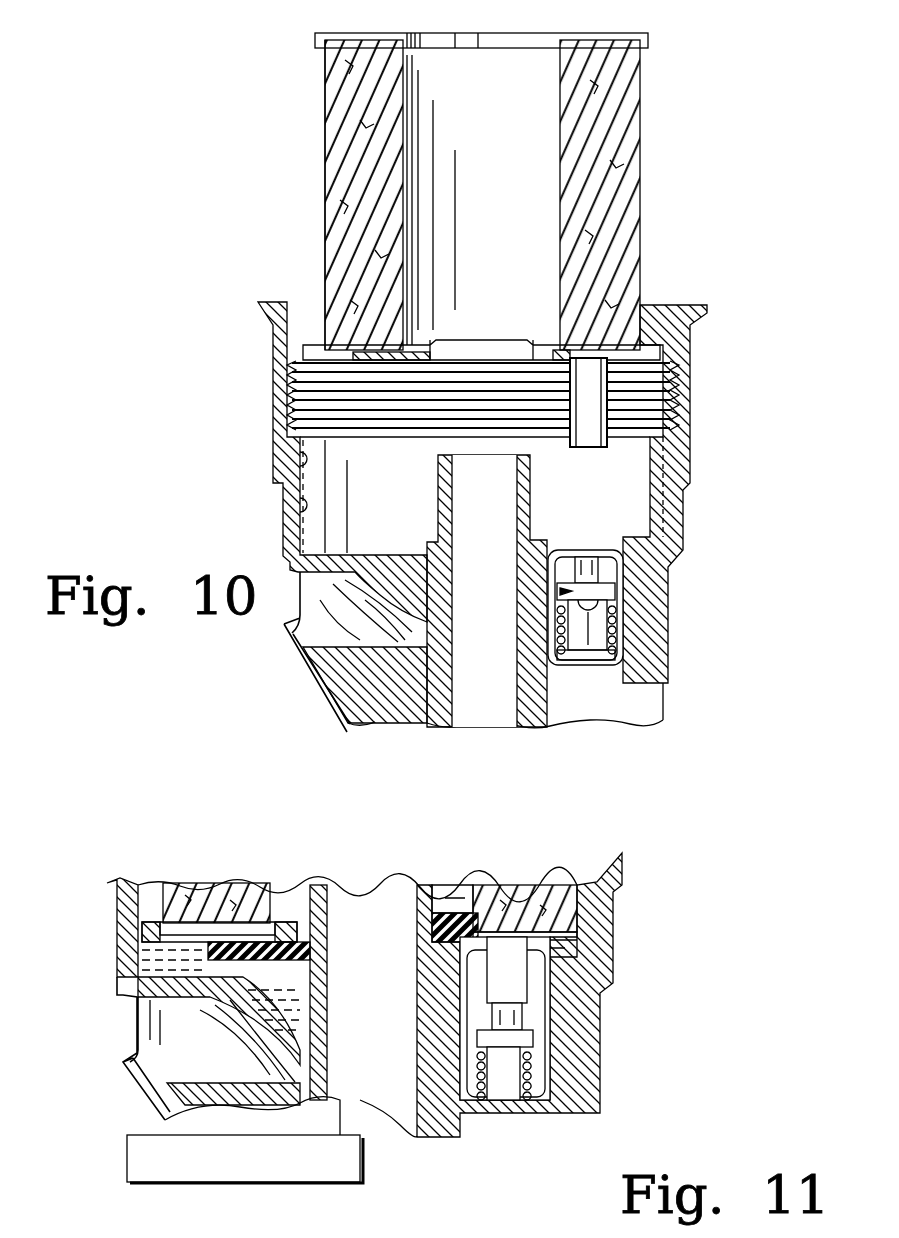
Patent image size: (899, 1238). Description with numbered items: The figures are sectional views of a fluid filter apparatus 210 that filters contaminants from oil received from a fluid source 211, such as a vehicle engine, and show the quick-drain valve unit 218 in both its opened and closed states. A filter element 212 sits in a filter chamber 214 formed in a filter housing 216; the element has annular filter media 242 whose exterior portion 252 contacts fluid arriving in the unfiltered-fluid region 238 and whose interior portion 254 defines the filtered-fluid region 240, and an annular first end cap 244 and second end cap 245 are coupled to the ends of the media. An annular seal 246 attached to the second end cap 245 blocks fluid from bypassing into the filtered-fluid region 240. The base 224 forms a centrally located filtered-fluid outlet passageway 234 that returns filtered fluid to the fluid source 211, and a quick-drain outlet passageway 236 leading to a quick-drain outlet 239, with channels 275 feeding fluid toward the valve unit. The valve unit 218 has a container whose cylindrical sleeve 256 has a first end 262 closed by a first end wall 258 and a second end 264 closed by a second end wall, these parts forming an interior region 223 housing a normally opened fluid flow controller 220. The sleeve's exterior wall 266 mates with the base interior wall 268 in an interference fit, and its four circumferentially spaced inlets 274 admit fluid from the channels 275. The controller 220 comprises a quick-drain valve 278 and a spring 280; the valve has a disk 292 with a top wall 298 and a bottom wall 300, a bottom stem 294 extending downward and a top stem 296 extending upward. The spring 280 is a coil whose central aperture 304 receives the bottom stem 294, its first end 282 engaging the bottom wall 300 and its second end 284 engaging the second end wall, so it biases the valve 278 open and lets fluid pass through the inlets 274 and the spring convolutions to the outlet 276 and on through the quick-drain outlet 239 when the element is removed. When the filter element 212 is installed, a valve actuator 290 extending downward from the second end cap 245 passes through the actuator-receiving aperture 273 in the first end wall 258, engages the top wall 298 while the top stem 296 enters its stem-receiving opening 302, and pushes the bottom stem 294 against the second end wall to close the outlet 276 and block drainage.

In FIG. 10, the fluid filter apparatus 210 is at (165, 95).
In FIG. 11, the fluid filter apparatus 210 is at (158, 812).
In FIG. 11, the fluid source 211 is at (127, 1160).
In FIG. 10, the filter element 212 is at (320, 133).
In FIG. 11, the filter element 212 is at (532, 892).
In FIG. 10, the filter chamber 214 is at (300, 459).
In FIG. 11, the filter chamber 214 is at (150, 883).
In FIG. 10, the filter housing 216 is at (268, 358).
In FIG. 11, the filter housing 216 is at (625, 890).
In FIG. 10, the quick-drain valve unit 218 is at (627, 538).
In FIG. 11, the quick-drain valve unit 218 is at (552, 975).
In FIG. 10, the fluid flow controller 220 is at (598, 668).
In FIG. 11, the fluid flow controller 220 is at (505, 1103).
In FIG. 10, the interior region 223 is at (620, 565).
In FIG. 11, the interior region 223 is at (560, 985).
In FIG. 10, the base 224 is at (275, 425).
In FIG. 11, the base 224 is at (614, 912).
In FIG. 10, the filtered-fluid outlet passageway 234 is at (450, 500).
In FIG. 11, the filtered-fluid outlet passageway 234 is at (340, 887).
In FIG. 10, the quick-drain outlet passageway 236 is at (620, 625).
In FIG. 11, the quick-drain outlet passageway 236 is at (560, 1040).
In FIG. 10, the unfiltered-fluid region 238 is at (300, 505).
In FIG. 11, the unfiltered-fluid region 238 is at (125, 900).
In FIG. 10, the quick-drain outlet 239 is at (560, 722).
In FIG. 11, the quick-drain outlet 239 is at (472, 1120).
In FIG. 11, the filtered-fluid region 240 is at (280, 895).
In FIG. 10, the filter media 242 is at (345, 165).
In FIG. 11, the filter media 242 is at (226, 895).
In FIG. 10, the first end cap 244 is at (322, 33).
In FIG. 10, the second end cap 245 is at (315, 345).
In FIG. 11, the second end cap 245 is at (455, 885).
In FIG. 10, the annular seal 246 is at (540, 350).
In FIG. 11, the annular seal 246 is at (405, 885).
In FIG. 10, the exterior portion 252 is at (325, 215).
In FIG. 11, the exterior portion 252 is at (580, 885).
In FIG. 10, the interior portion 254 is at (408, 175).
In FIG. 11, the interior portion 254 is at (470, 885).
In FIG. 10, the cylindrical sleeve 256 is at (625, 652).
In FIG. 11, the cylindrical sleeve 256 is at (560, 1090).
In FIG. 10, the first end wall 258 is at (562, 548).
In FIG. 11, the first end wall 258 is at (470, 945).
In FIG. 10, the first end 262 is at (560, 598).
In FIG. 11, the first end 262 is at (455, 1030).
In FIG. 10, the second end 264 is at (560, 700).
In FIG. 11, the second end 264 is at (462, 1082).
In FIG. 10, the exterior wall 266 is at (622, 690).
In FIG. 11, the exterior wall 266 is at (560, 1100).
In FIG. 10, the interior wall 268 is at (625, 676).
In FIG. 11, the interior wall 268 is at (595, 1103).
In FIG. 10, the actuator-receiving aperture 273 is at (585, 540).
In FIG. 11, the actuator-receiving aperture 273 is at (520, 958).
In FIG. 10, the inlets 274 is at (622, 580).
In FIG. 11, the inlets 274 is at (458, 992).
In FIG. 10, the channels 275 is at (400, 572).
In FIG. 11, the channels 275 is at (258, 1000).
In FIG. 10, the outlet 276 is at (580, 692).
In FIG. 11, the outlet 276 is at (512, 1103).
In FIG. 10, the quick-drain valve 278 is at (560, 575).
In FIG. 11, the quick-drain valve 278 is at (460, 1040).
In FIG. 10, the spring 280 is at (558, 655).
In FIG. 11, the spring 280 is at (465, 1070).
In FIG. 10, the first end 282 is at (635, 636).
In FIG. 11, the first end 282 is at (568, 1080).
In FIG. 10, the second end 284 is at (660, 700).
In FIG. 11, the second end 284 is at (445, 1122).
In FIG. 10, the valve actuator 290 is at (575, 448).
In FIG. 11, the valve actuator 290 is at (540, 966).
In FIG. 10, the disk 292 is at (560, 618).
In FIG. 11, the disk 292 is at (460, 1055).
In FIG. 10, the bottom stem 294 is at (560, 680).
In FIG. 11, the bottom stem 294 is at (420, 1095).
In FIG. 10, the top stem 296 is at (600, 555).
In FIG. 11, the top stem 296 is at (458, 982).
In FIG. 10, the top wall 298 is at (600, 560).
In FIG. 11, the top wall 298 is at (470, 1030).
In FIG. 10, the bottom wall 300 is at (612, 600).
In FIG. 11, the bottom wall 300 is at (505, 1073).
In FIG. 10, the stem-receiving opening 302 is at (600, 447).
In FIG. 11, the stem-receiving opening 302 is at (560, 1002).
In FIG. 10, the central aperture 304 is at (600, 690).
In FIG. 11, the central aperture 304 is at (498, 1103).